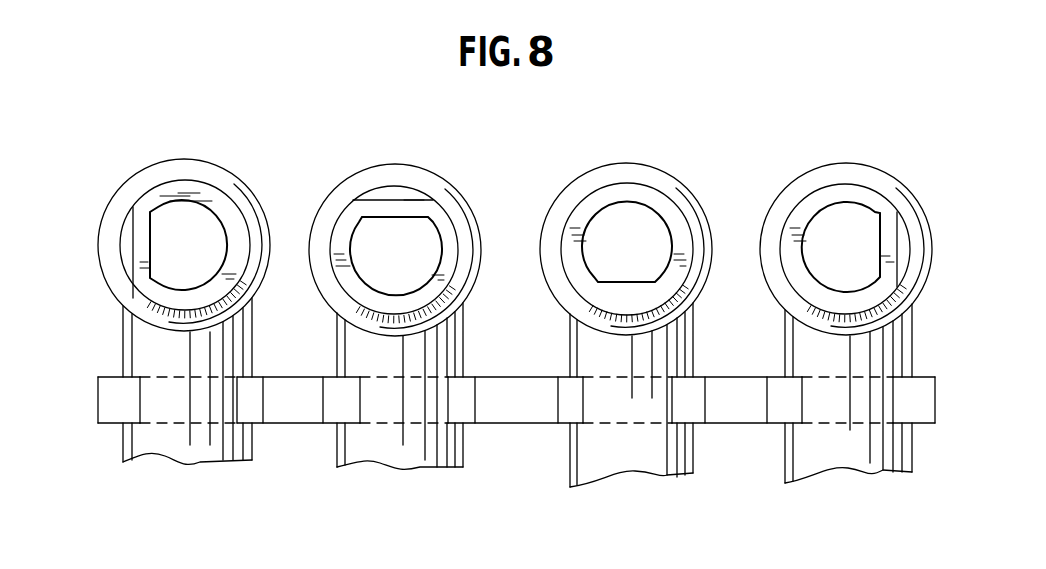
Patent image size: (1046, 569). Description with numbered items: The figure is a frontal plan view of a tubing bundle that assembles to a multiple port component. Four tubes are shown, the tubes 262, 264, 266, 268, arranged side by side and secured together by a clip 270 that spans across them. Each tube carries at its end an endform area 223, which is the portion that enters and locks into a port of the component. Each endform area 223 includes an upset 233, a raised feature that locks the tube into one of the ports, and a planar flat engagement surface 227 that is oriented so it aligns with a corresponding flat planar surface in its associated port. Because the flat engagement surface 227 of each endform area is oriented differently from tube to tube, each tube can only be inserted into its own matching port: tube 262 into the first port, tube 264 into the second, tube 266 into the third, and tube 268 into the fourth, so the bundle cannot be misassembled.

The endform area 223 is at (180, 152).
The upset 233 is at (215, 166).
The planar flat engagement surface 227 is at (133, 228).
The tube 262 is at (805, 347).
The tube 264 is at (590, 358).
The tube 266 is at (365, 346).
The tube 268 is at (245, 330).
The clip 270 is at (770, 426).